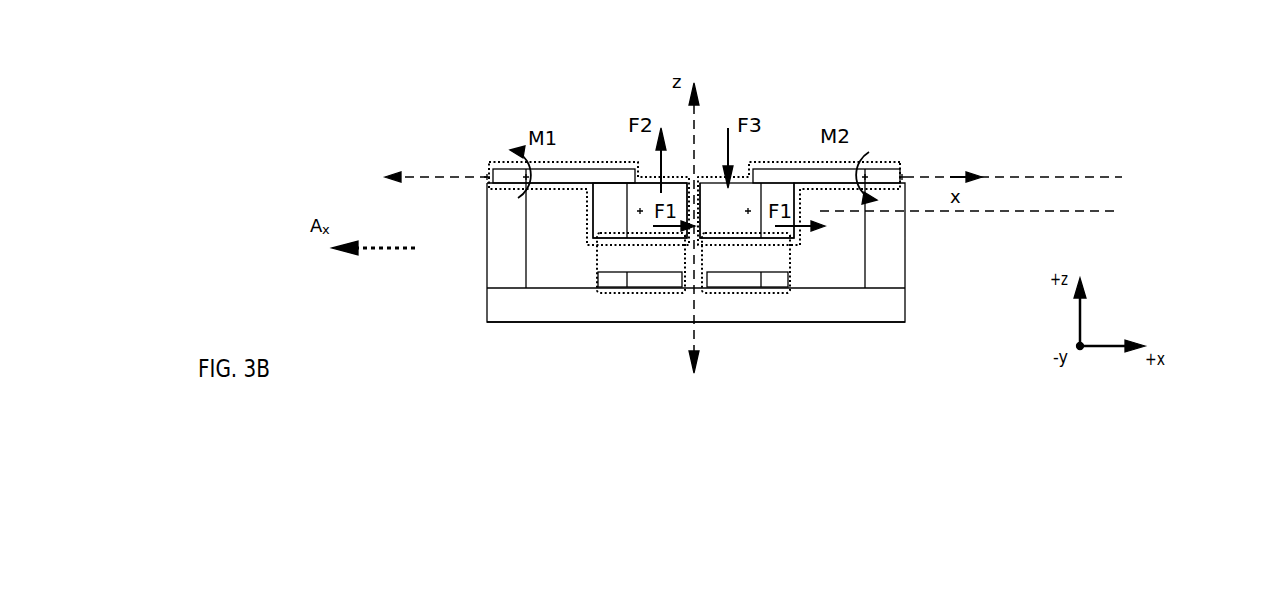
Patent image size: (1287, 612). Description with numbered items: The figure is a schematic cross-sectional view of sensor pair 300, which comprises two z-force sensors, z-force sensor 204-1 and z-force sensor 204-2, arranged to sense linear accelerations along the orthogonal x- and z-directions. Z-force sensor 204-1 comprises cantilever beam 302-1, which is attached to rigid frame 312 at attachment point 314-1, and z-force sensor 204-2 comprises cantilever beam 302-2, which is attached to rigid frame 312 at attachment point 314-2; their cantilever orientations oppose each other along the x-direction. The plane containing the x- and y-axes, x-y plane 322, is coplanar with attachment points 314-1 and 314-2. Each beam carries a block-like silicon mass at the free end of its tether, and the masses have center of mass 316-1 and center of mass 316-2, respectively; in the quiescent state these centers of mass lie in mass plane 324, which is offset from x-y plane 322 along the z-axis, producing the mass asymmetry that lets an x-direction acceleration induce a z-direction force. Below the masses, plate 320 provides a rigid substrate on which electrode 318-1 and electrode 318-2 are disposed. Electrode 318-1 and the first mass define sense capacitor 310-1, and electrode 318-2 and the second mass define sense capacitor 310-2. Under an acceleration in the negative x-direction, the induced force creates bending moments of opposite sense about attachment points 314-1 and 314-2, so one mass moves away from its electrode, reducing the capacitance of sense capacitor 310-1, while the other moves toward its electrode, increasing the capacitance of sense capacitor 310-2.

The sensor pair 300 is at (357, 36).
The z-force sensor 204-1 is at (498, 88).
The z-force sensor 204-2 is at (897, 86).
The cantilever beam 302-1 is at (510, 154).
The cantilever beam 302-2 is at (877, 154).
The attachment point 314-1 is at (457, 188).
The attachment point 314-2 is at (932, 184).
The center of mass 316-1 is at (607, 163).
The center of mass 316-2 is at (781, 163).
The rigid frame 312 is at (695, 252).
The plate 320 is at (528, 311).
The sense capacitor 310-1 is at (566, 297).
The sense capacitor 310-2 is at (825, 297).
The electrode 318-1 is at (608, 316).
The electrode 318-2 is at (781, 316).
The x-y plane 322 is at (801, 160).
The mass plane 324 is at (1028, 229).